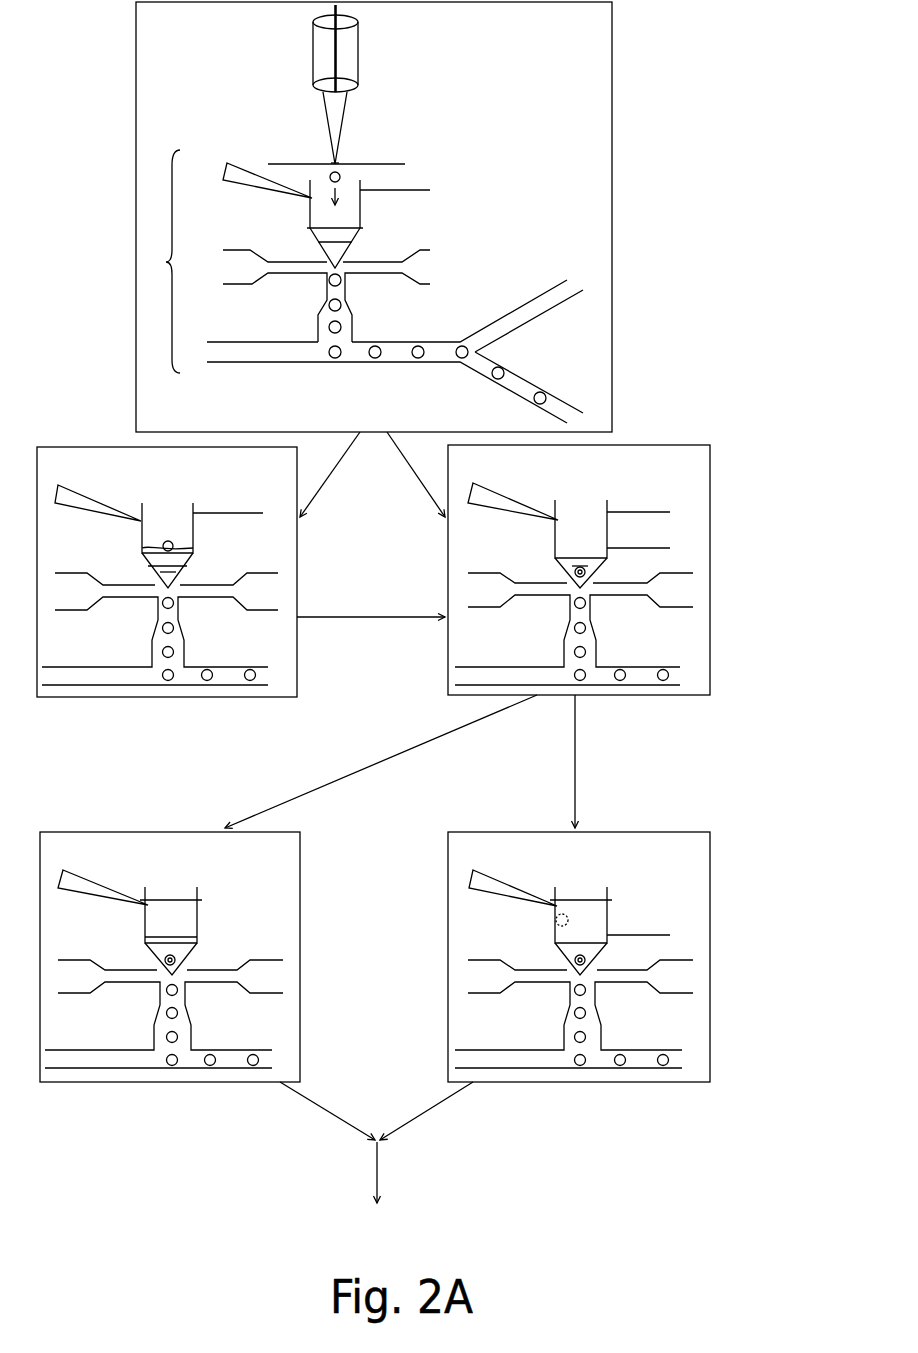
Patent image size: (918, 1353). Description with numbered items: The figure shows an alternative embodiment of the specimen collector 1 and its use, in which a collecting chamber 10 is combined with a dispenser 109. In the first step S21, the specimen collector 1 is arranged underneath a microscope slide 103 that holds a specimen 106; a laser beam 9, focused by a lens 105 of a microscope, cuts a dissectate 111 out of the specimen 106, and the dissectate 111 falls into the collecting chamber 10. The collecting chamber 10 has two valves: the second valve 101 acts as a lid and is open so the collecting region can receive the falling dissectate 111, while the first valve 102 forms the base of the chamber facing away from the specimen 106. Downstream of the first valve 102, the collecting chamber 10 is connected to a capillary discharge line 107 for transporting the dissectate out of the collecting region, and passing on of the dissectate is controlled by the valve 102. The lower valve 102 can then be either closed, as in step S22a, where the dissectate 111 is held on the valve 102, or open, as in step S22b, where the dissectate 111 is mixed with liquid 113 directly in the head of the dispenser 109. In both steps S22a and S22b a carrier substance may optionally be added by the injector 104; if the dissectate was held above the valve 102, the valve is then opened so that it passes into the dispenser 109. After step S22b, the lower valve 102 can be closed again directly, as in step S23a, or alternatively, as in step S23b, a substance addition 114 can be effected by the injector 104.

The specimen collector 1 is at (167, 261).
The laser beam 9 is at (340, 113).
The collecting chamber 10 is at (310, 225).
The second valve 101 is at (430, 190).
The first valve 102 is at (362, 228).
The microscope slide 103 is at (278, 164).
The injector 104 is at (227, 163).
The lens 105 is at (352, 57).
The specimen 106 is at (327, 163).
The discharge line 107 is at (233, 353).
The dispenser 109 is at (350, 250).
The dissectate 111 is at (350, 163).
The liquid 113 is at (163, 575).
The substance addition 114 is at (555, 917).
The first step S21 is at (612, 172).
The step S22a is at (297, 547).
The step S22b is at (710, 545).
The step S23a is at (300, 925).
The step S23b is at (710, 930).